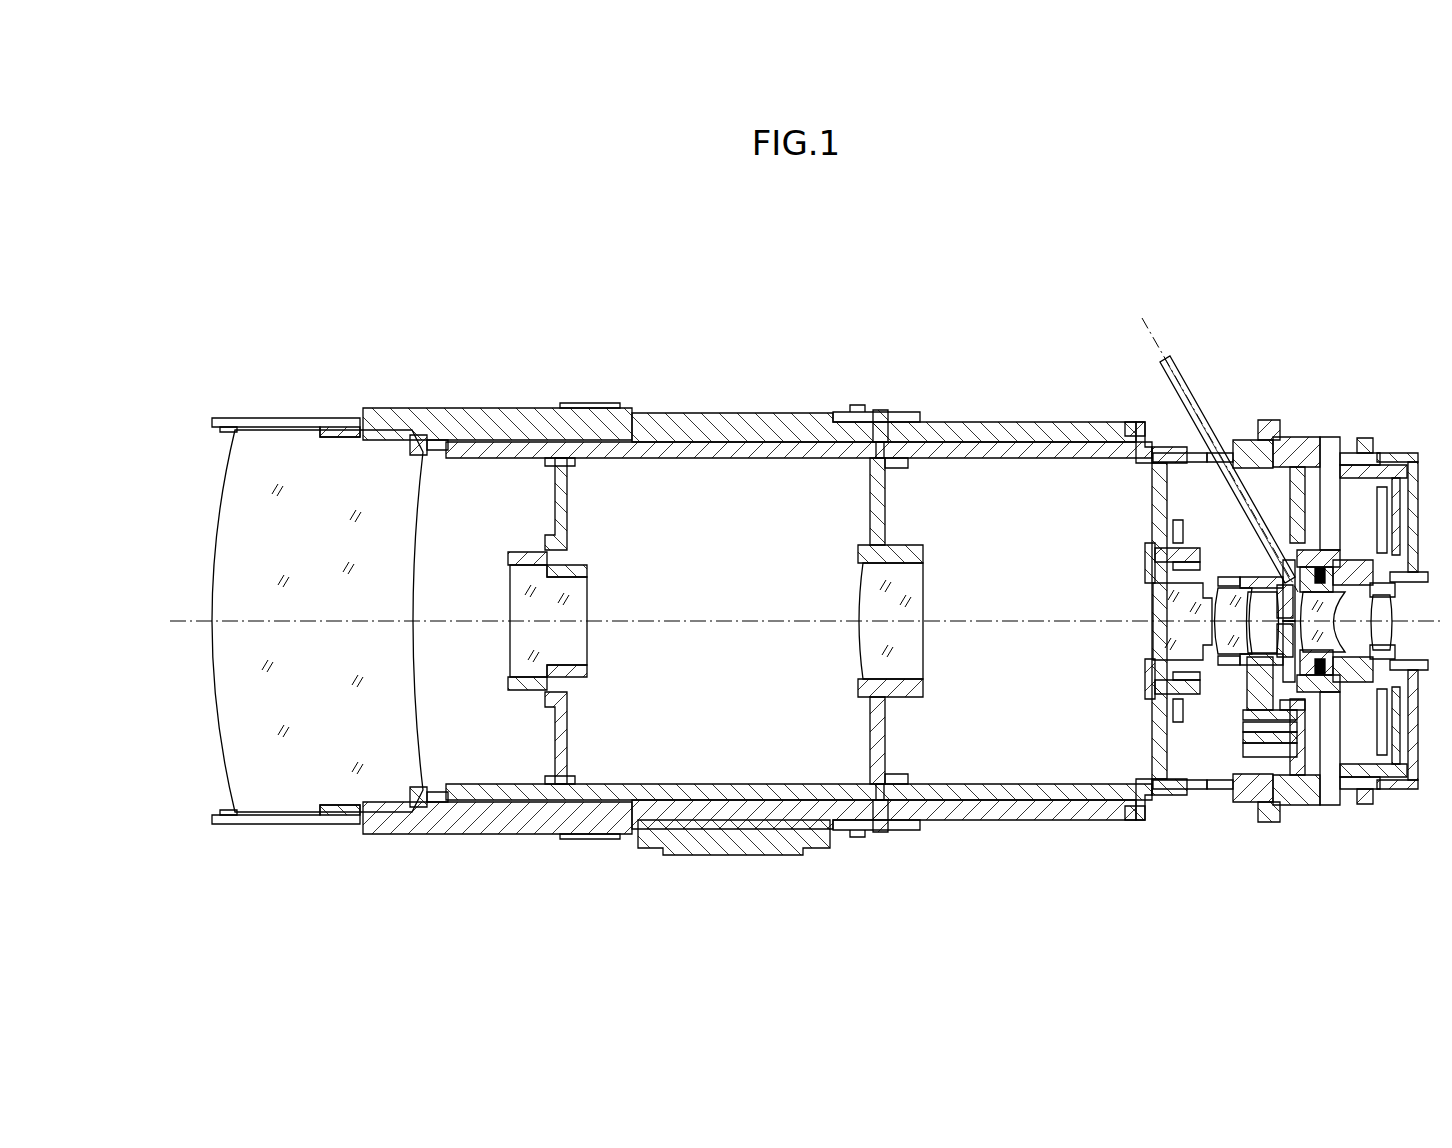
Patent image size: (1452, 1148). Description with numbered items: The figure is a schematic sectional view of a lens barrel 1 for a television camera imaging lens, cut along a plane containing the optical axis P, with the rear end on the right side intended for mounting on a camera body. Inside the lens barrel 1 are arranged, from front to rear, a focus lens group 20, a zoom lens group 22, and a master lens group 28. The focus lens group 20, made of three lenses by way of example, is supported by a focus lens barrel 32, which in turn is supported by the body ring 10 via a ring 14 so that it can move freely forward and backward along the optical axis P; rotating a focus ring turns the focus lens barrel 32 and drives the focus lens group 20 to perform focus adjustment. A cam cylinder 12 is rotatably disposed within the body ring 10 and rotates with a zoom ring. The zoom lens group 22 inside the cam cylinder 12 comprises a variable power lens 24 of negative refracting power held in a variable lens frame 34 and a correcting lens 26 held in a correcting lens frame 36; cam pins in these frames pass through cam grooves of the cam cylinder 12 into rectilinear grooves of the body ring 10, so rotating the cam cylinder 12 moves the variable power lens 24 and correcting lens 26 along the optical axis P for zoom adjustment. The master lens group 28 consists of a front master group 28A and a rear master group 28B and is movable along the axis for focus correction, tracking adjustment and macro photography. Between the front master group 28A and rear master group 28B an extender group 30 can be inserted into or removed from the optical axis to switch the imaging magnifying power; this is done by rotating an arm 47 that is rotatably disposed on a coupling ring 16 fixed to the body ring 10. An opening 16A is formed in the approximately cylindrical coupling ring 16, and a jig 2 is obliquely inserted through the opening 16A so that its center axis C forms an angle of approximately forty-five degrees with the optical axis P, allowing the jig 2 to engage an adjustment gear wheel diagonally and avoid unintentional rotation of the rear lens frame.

The lens barrel 1 is at (818, 272).
The jig 2 is at (1186, 390).
The center axis of the jig C is at (1139, 326).
The optical axis P is at (187, 608).
The body ring 10 is at (735, 430).
The cam cylinder 12 is at (790, 447).
The ring 14 is at (511, 407).
The coupling ring 16 is at (1156, 452).
The opening 16A is at (1201, 465).
The focus lens group 20 is at (412, 492).
The zoom lens group 22 is at (825, 566).
The variable power lens 24 is at (584, 602).
The correcting lens 26 is at (863, 605).
The master lens group 28 is at (1217, 628).
The front master group 28A is at (1157, 614).
The rear master group 28B is at (1358, 648).
The extender group 30 is at (1226, 575).
The focus lens barrel 32 is at (341, 417).
The variable lens frame 34 is at (567, 508).
The correcting lens frame 36 is at (885, 518).
The arm 47 is at (1250, 700).